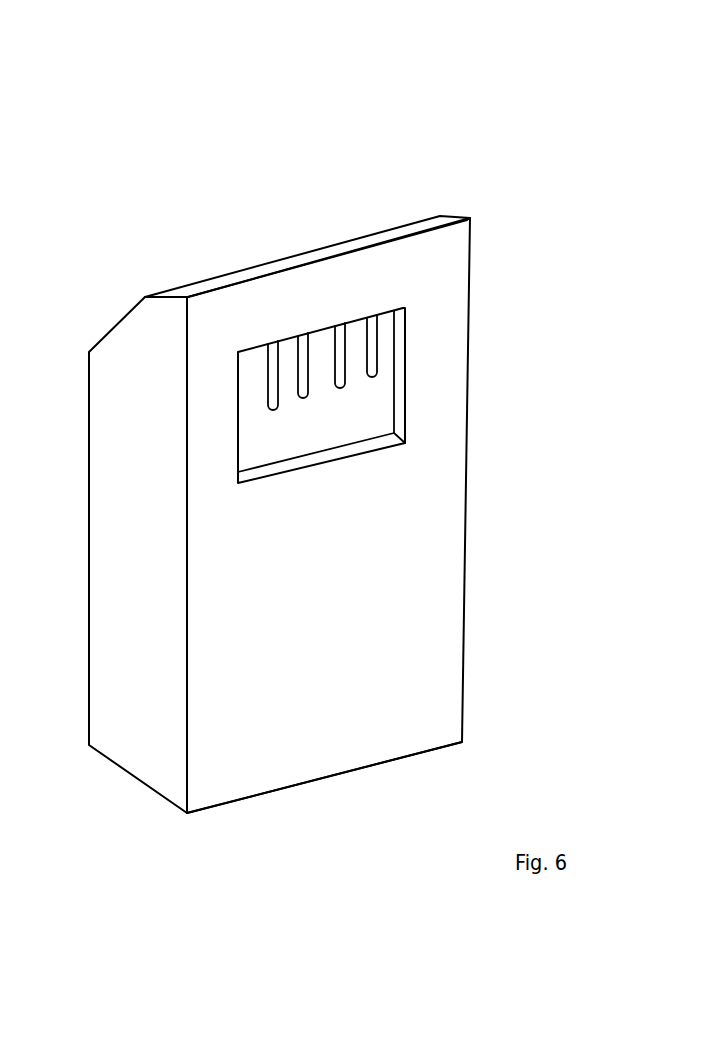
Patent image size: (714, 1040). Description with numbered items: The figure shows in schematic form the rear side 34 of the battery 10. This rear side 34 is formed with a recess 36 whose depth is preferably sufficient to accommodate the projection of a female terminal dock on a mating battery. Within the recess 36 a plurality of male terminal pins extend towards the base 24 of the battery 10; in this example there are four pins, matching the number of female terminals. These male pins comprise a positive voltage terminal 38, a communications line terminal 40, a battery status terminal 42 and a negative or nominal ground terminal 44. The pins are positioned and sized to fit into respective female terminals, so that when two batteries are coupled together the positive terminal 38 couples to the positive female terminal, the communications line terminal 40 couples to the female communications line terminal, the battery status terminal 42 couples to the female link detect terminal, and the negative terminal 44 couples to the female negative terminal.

The battery 10 is at (318, 450).
The base 24 is at (257, 800).
The rear side 34 is at (423, 627).
The recess 36 is at (318, 271).
The positive voltage terminal 38 is at (373, 343).
The communications line terminal 40 is at (340, 327).
The battery status terminal 42 is at (301, 372).
The negative or nominal ground terminal 44 is at (272, 386).